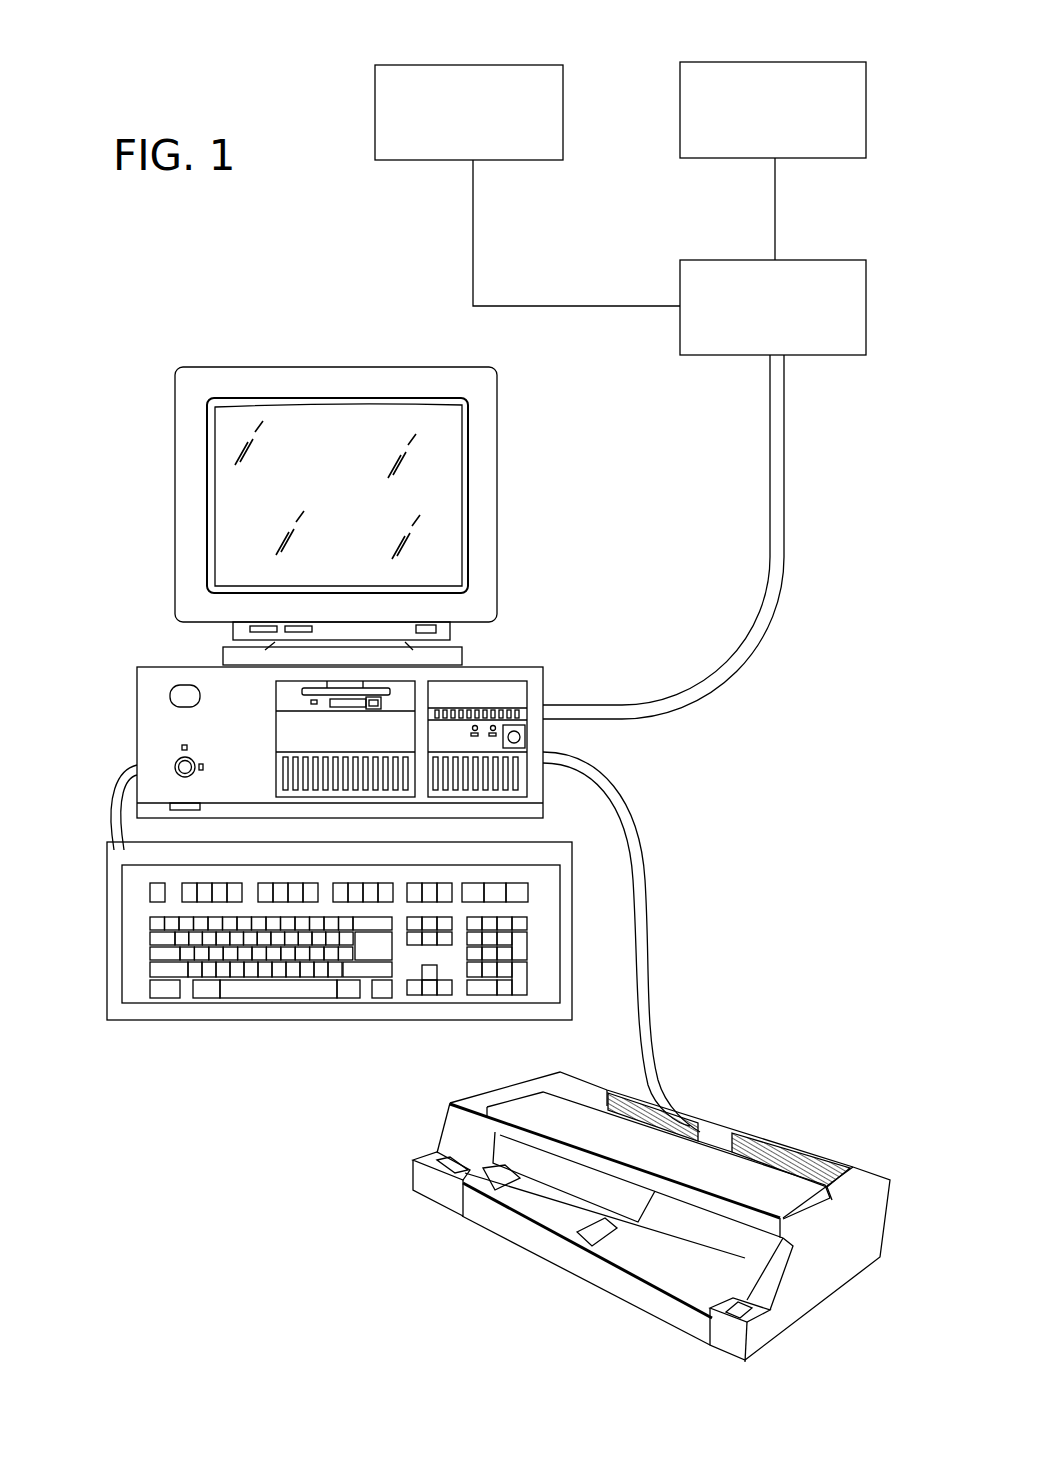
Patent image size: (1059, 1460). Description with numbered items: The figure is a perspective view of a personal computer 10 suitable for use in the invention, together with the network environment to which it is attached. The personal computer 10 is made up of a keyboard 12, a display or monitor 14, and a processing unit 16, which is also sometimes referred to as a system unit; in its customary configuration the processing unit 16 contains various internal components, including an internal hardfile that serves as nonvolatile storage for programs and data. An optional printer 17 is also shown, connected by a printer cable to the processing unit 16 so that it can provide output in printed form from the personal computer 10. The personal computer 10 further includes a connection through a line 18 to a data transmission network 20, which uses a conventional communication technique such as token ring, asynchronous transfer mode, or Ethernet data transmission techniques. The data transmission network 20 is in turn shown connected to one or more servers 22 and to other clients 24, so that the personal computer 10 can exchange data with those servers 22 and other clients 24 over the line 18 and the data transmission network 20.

The personal computer 10 is at (245, 1077).
The keyboard 12 is at (107, 897).
The display 14 is at (497, 458).
The processing unit 16 is at (547, 668).
The printer 17 is at (810, 1153).
The line 18 is at (785, 438).
The data transmission network 20 is at (817, 258).
The servers 22 is at (797, 61).
The other clients 24 is at (375, 88).